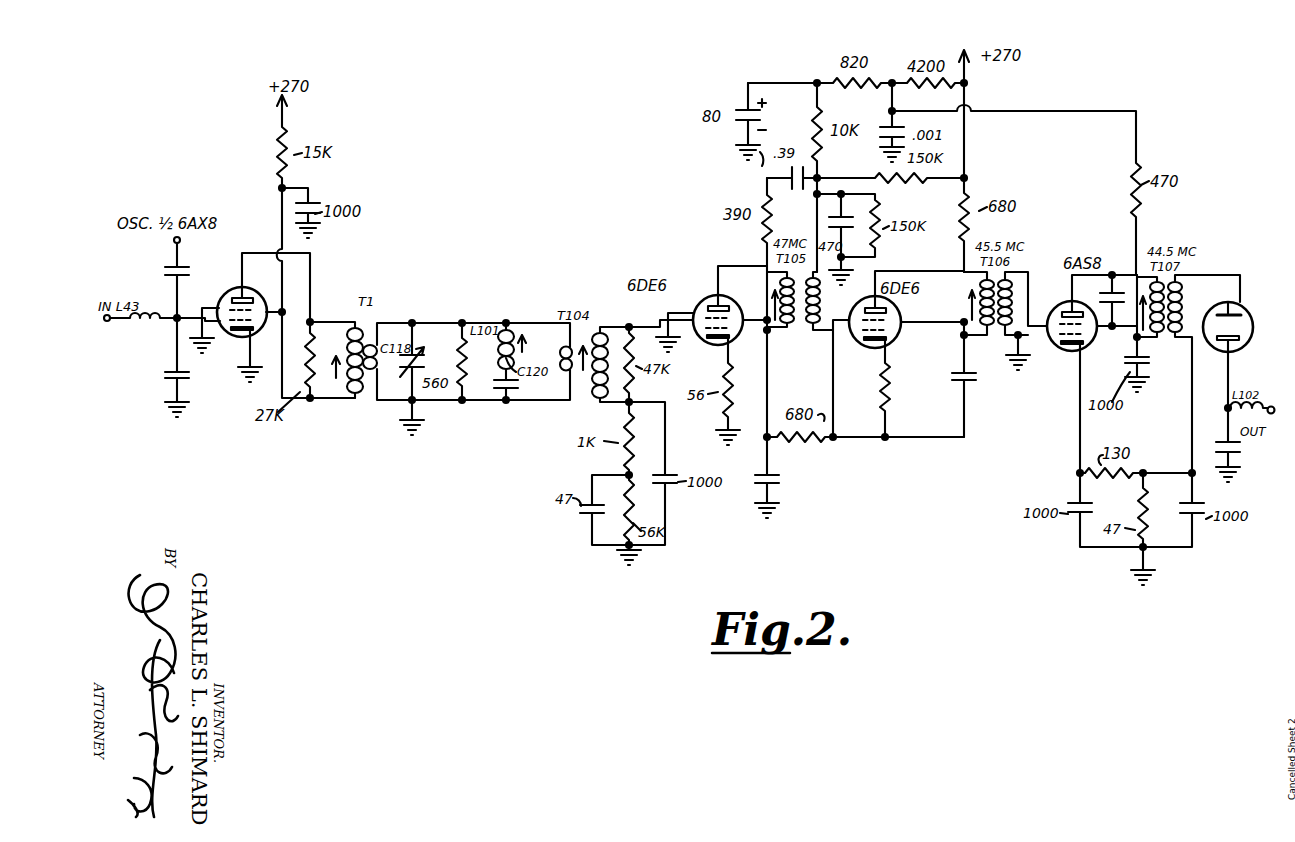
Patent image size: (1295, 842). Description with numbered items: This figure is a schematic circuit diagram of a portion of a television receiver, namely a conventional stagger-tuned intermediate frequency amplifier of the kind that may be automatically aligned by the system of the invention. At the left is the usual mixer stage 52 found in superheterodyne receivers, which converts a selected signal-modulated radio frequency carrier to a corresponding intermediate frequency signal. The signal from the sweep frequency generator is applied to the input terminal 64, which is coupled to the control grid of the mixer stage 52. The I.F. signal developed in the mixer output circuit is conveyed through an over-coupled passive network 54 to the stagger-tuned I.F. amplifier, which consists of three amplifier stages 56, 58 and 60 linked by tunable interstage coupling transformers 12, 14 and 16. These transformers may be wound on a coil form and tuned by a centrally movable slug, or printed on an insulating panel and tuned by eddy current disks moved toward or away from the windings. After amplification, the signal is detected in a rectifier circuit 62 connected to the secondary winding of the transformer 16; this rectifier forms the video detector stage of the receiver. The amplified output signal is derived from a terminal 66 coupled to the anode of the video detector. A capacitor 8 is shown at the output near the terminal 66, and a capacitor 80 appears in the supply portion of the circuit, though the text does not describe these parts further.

The output bypass capacitor 8 is at (1220, 440).
The tunable interstage coupling transformer 12 is at (814, 361).
The tunable interstage coupling transformer 14 is at (1003, 361).
The tunable interstage coupling transformer 16 is at (1182, 361).
The mixer stage 52 is at (240, 290).
The over-coupled passive network 54 is at (510, 313).
The amplifier stage 56 is at (700, 296).
The amplifier stage 58 is at (880, 301).
The amplifier stage 60 is at (1067, 300).
The rectifier circuit 62 is at (1252, 269).
The input terminal 64 is at (110, 322).
The terminal 66 is at (1272, 406).
The filter capacitor 80 is at (734, 113).